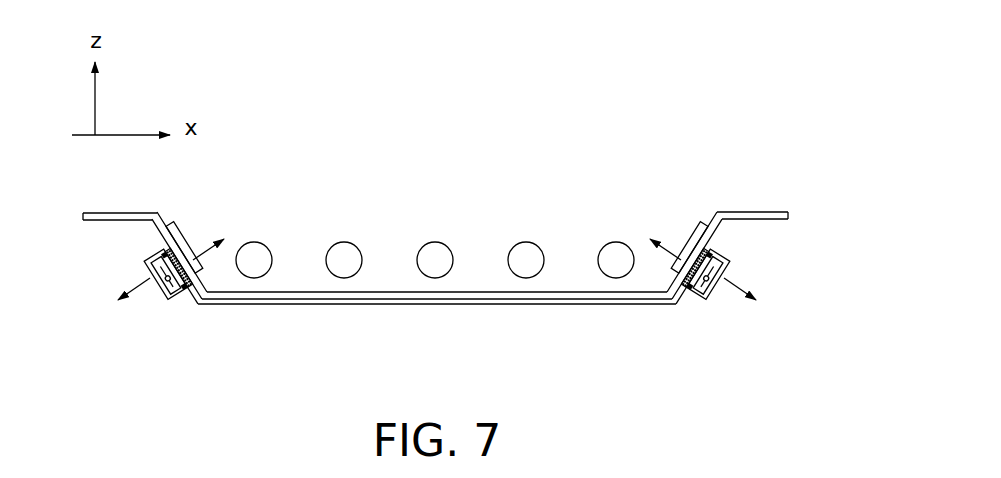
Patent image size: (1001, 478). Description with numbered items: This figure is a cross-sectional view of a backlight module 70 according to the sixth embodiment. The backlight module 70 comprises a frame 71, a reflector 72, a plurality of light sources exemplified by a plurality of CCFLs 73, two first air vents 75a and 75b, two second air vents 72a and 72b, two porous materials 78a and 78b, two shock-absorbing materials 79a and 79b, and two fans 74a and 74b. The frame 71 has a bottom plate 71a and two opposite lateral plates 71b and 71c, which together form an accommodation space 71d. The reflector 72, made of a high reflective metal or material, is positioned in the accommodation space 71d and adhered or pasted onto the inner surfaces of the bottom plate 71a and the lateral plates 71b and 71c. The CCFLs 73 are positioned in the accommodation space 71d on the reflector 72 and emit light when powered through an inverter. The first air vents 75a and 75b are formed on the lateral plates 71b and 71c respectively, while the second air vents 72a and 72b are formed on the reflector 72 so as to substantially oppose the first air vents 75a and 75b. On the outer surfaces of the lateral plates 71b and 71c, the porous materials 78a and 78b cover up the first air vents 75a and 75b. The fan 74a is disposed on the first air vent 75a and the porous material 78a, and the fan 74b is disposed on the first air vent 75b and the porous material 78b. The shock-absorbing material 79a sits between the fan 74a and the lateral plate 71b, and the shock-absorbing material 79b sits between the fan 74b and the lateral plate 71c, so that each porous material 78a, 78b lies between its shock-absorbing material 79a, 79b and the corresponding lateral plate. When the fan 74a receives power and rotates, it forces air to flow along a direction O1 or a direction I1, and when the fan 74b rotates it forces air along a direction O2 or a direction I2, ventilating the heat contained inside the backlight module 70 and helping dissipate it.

The backlight module 70 is at (786, 70).
The frame 71 is at (792, 211).
The bottom plate 71a is at (467, 302).
The lateral plate 71b is at (724, 222).
The lateral plate 71c is at (150, 222).
The accommodation space 71d is at (386, 258).
The reflector 72 is at (528, 294).
The second air vent 72a is at (675, 264).
The second air vent 72b is at (199, 264).
The CCFLs 73 is at (437, 242).
The fan 74a is at (709, 304).
The fan 74b is at (165, 304).
The first air vent 75a is at (694, 245).
The first air vent 75b is at (180, 245).
The porous material 78a is at (685, 289).
The porous material 78b is at (189, 289).
The shock-absorbing material 79a is at (695, 292).
The shock-absorbing material 79b is at (179, 292).
The direction I1 is at (657, 236).
The direction I2 is at (216, 236).
The direction O1 is at (755, 296).
The direction O2 is at (114, 295).